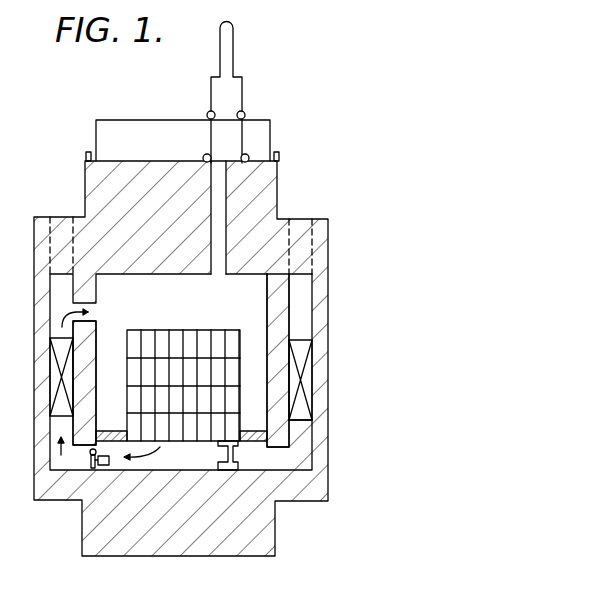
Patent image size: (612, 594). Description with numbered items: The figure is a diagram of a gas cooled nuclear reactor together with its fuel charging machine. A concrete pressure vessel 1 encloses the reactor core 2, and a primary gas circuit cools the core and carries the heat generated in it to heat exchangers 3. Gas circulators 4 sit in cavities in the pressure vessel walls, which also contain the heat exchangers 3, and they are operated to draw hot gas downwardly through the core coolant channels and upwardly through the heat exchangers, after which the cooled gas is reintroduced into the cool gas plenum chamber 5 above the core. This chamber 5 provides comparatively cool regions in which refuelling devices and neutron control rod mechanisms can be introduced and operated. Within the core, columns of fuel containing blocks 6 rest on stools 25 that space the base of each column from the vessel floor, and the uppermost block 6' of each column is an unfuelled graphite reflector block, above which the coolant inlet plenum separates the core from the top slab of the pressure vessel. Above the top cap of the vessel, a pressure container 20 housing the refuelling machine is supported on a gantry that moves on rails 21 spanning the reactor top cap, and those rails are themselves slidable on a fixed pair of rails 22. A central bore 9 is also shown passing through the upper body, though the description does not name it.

The concrete pressure vessel 1 is at (330, 235).
The reactor core 2 is at (164, 330).
The heat exchangers 3 is at (308, 382).
The gas circulators 4 is at (96, 468).
The cool gas plenum chamber 5 is at (125, 306).
The fuel containing blocks 6 is at (251, 392).
The uppermost block 6' is at (306, 376).
The bore 9 is at (220, 202).
The pressure container 20 is at (243, 100).
The rails 21 is at (119, 120).
The fixed pair of rails 22 is at (86, 155).
The stools 25 is at (238, 462).